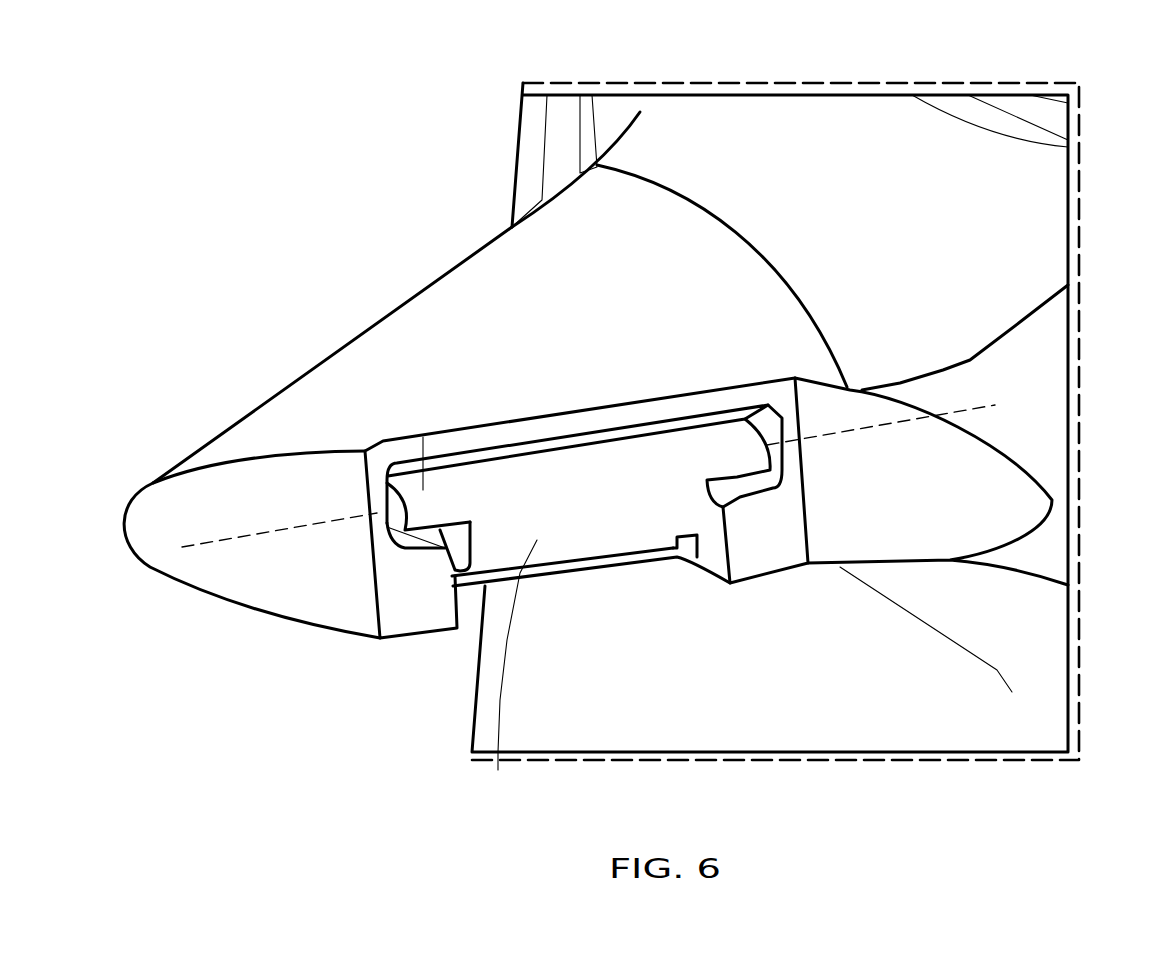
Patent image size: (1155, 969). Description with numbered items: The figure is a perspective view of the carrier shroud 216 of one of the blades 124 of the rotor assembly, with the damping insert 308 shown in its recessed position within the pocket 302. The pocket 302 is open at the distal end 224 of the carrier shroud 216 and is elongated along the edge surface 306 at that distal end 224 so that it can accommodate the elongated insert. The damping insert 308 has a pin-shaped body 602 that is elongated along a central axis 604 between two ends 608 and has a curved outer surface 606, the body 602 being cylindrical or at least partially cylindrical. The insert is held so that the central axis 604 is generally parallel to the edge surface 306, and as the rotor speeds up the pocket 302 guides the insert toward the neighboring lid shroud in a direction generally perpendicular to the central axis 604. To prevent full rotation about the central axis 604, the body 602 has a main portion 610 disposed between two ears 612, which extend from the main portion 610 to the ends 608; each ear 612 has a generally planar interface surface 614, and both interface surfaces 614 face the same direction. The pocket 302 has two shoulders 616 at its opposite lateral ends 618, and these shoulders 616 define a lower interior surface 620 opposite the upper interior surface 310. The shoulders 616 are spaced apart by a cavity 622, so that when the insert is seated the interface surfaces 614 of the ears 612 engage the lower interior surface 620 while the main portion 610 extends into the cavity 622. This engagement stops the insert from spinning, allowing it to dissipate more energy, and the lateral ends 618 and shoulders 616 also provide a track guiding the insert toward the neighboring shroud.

The blade 124 is at (418, 104).
The carrier shroud 216 is at (376, 336).
The distal end 224 is at (386, 657).
The pocket 302 is at (782, 400).
The edge surface 306 is at (400, 600).
The damping insert 308 is at (423, 435).
The upper interior surface 310 is at (663, 450).
The pin-shaped body 602 is at (477, 455).
The central axis 604 is at (230, 534).
The curved outer surface 606 is at (610, 460).
The ends 608 is at (377, 633).
The main portion 610 is at (592, 513).
The ears 612 is at (727, 443).
The interface surface 614 is at (570, 520).
The shoulders 616 is at (465, 586).
The lateral ends 618 is at (380, 510).
The lower interior surface 620 is at (430, 540).
The cavity 622 is at (683, 572).